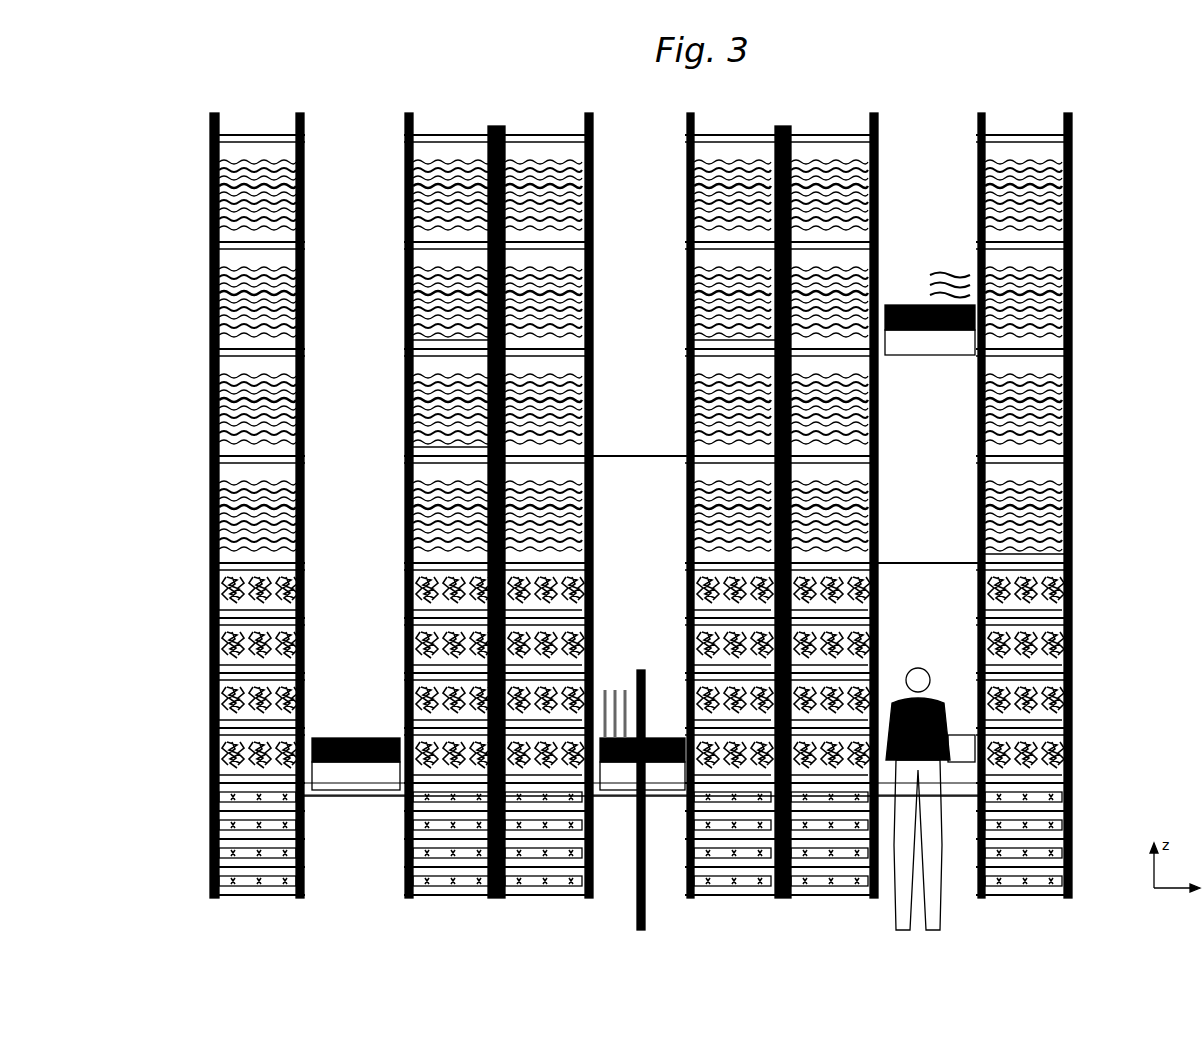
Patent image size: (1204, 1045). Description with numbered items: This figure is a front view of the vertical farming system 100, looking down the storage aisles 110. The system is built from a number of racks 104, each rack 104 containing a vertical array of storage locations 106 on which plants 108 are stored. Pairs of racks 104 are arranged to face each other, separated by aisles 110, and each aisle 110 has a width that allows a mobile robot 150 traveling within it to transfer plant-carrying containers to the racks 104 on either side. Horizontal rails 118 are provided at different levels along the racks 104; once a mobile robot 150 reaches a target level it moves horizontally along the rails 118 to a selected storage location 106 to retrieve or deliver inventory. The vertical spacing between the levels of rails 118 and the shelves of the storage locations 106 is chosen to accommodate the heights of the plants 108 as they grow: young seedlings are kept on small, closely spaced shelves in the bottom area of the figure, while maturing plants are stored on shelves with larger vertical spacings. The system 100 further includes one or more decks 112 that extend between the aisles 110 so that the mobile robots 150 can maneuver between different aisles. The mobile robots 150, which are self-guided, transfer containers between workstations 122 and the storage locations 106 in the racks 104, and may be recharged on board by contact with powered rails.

The vertical farming system 100 is at (283, 88).
The rack 104 is at (210, 310).
The storage location 106 is at (407, 320).
The plant 108 is at (407, 435).
The aisle 110 is at (362, 192).
The deck 112 is at (392, 795).
The rail 118 is at (402, 565).
The workstation 122 is at (372, 826).
The mobile robot 150 is at (900, 310).